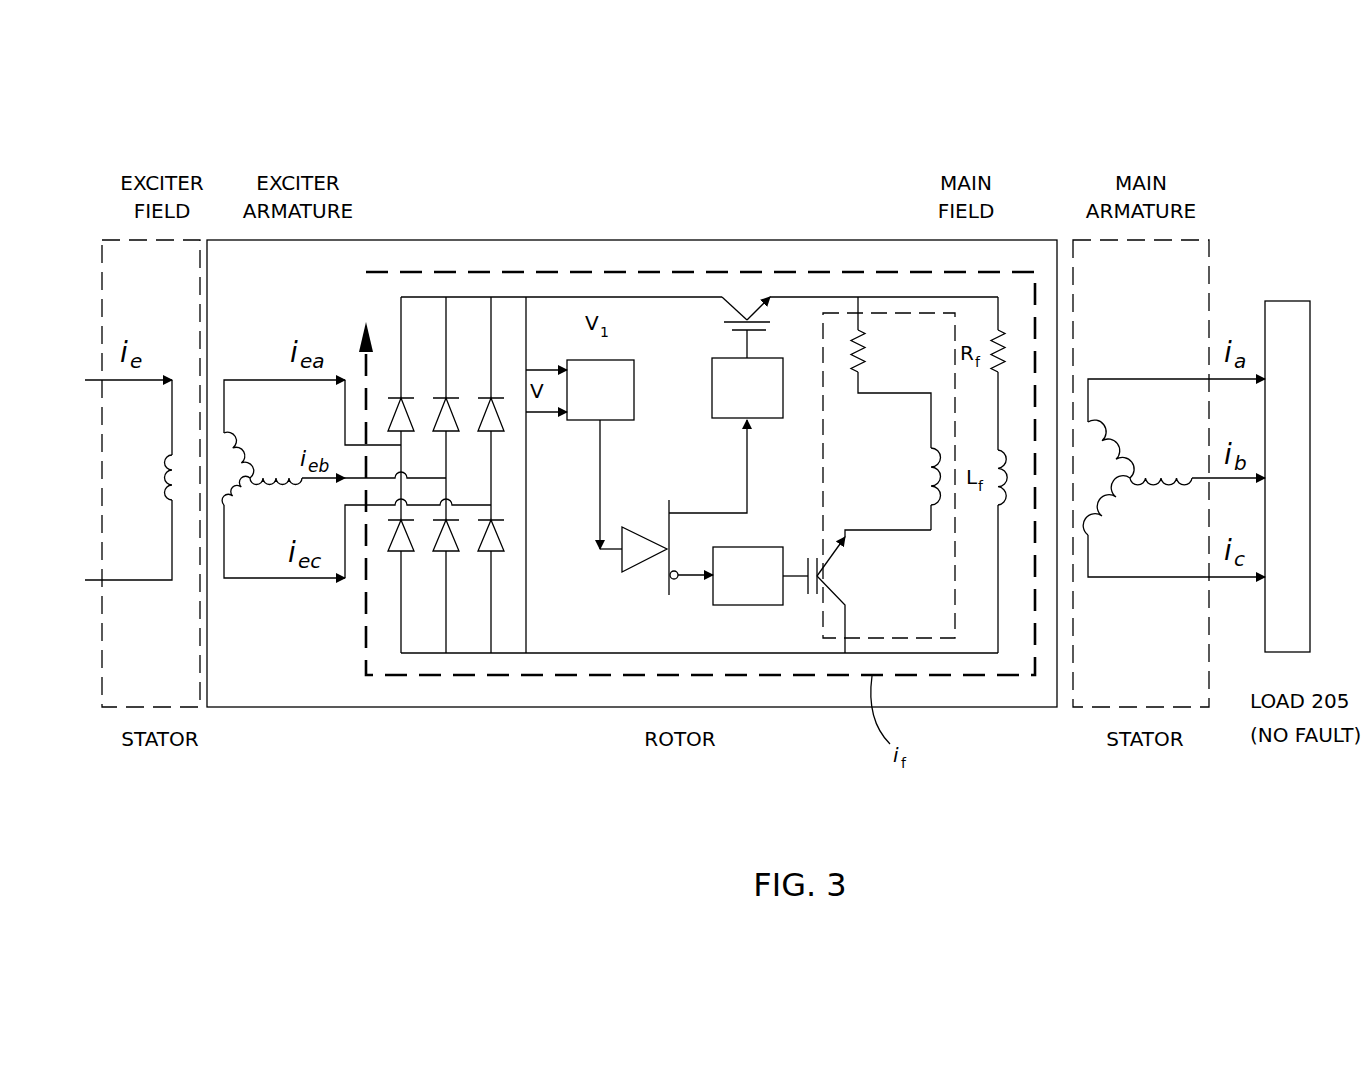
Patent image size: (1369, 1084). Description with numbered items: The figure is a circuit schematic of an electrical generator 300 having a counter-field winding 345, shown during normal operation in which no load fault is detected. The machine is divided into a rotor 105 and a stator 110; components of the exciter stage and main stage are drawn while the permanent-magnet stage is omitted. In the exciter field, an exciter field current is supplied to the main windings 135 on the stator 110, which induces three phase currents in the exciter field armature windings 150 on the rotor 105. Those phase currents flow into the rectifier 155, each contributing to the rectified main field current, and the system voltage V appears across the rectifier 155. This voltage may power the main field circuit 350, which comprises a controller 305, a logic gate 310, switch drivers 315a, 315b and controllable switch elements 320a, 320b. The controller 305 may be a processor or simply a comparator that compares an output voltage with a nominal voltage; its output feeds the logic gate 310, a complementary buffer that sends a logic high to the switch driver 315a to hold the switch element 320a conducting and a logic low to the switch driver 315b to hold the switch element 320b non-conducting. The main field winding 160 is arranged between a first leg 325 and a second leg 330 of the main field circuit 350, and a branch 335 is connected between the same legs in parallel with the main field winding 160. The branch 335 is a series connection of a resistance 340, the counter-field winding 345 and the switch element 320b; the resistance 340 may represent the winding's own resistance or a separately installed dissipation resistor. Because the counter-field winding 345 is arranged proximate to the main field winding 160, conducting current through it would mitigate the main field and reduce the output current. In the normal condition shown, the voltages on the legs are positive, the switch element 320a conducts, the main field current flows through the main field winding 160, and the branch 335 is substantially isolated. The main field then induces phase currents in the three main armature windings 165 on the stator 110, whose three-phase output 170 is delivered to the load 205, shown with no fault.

The rotor 105 is at (247, 676).
The stator 110 is at (152, 676).
The main windings 135 is at (165, 478).
The exciter field armature windings 150 is at (232, 507).
The rectifier 155 is at (550, 475).
The main field winding 160 is at (1003, 505).
The main armature windings 165 is at (1096, 507).
The three-phase output 170 is at (1232, 262).
The load 205 is at (1338, 682).
The electrical generator 300 is at (240, 786).
The controller 305 is at (600, 454).
The logic gate 310 is at (656, 526).
The switch driver 315a is at (747, 388).
The switch driver 315b is at (748, 576).
The switch element 320a is at (732, 329).
The switch element 320b is at (807, 565).
The first leg 325 is at (895, 297).
The second leg 330 is at (677, 653).
The branch 335 is at (910, 638).
The resistance 340 is at (891, 372).
The counter-field winding 345 is at (907, 478).
The main field circuit 350 is at (800, 653).